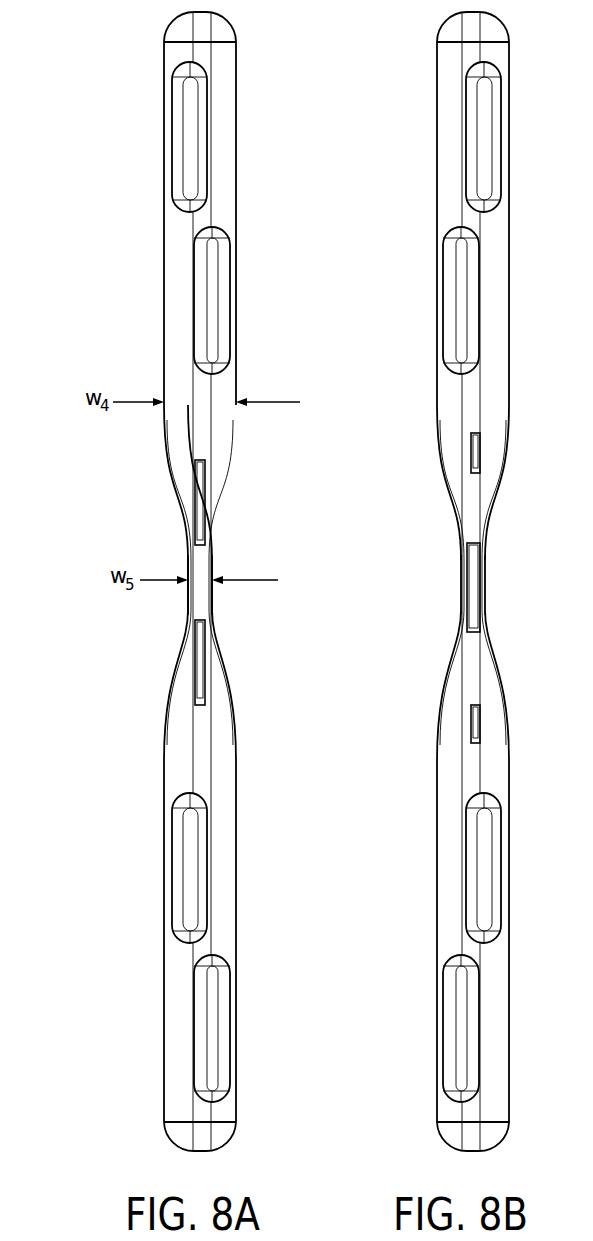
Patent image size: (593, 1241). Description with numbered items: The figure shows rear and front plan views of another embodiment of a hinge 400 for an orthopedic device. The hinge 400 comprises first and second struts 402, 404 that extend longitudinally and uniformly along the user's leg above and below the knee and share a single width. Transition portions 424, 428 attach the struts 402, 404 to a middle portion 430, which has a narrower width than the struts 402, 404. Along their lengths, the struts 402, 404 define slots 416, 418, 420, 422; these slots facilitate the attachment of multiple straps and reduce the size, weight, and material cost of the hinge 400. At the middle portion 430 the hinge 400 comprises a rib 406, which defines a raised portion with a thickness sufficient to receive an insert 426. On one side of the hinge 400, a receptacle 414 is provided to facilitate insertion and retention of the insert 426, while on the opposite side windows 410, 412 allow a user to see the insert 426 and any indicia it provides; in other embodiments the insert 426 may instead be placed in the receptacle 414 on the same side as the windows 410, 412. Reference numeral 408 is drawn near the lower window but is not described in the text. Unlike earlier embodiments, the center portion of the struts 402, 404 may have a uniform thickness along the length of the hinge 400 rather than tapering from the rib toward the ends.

In FIG. 8A, the hinge 400 is at (152, 333).
In FIG. 8A, the first strut 402 is at (225, 172).
In FIG. 8B, the first strut 402 is at (453, 212).
In FIG. 8A, the second strut 404 is at (177, 975).
In FIG. 8B, the second strut 404 is at (453, 938).
In FIG. 8A, the rib 406 is at (188, 605).
In FIG. 8A, the aperture of lower neck slot 408 is at (197, 668).
In FIG. 8A, the window 410 is at (200, 469).
In FIG. 8A, the window 412 is at (203, 693).
In FIG. 8B, the receptacle 414 is at (473, 608).
In FIG. 8A, the slot 416 is at (188, 187).
In FIG. 8A, the slot 418 is at (212, 335).
In FIG. 8A, the slot 420 is at (190, 877).
In FIG. 8A, the slot 422 is at (213, 1038).
In FIG. 8A, the transition portion 424 is at (175, 498).
In FIG. 8A, the insert 426 is at (218, 645).
In FIG. 8A, the transition portion 428 is at (225, 662).
In FIG. 8A, the middle portion 430 is at (213, 593).